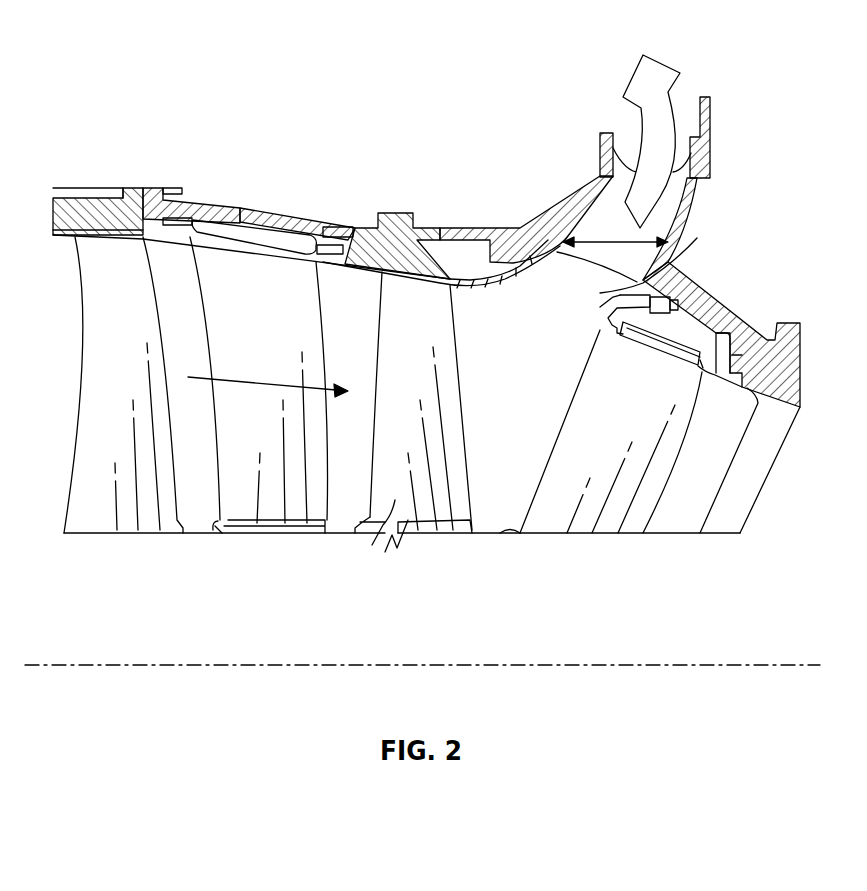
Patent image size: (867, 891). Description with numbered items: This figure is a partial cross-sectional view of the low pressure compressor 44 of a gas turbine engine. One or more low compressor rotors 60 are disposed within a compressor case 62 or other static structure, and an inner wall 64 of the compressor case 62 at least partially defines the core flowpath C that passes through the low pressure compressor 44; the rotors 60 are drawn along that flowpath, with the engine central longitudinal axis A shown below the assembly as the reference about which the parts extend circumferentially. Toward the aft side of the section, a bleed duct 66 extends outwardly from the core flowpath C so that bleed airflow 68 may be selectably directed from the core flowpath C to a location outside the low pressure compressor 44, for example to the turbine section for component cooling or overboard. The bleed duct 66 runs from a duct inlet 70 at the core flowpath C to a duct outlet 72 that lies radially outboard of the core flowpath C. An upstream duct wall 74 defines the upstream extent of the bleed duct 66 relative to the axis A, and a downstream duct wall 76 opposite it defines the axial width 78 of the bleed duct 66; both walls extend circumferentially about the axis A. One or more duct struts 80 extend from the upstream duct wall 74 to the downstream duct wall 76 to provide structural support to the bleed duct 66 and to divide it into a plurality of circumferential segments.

The low pressure compressor 44 is at (159, 66).
The low compressor rotor 60 is at (95, 507).
The compressor case 62 is at (380, 230).
The inner wall 64 is at (443, 270).
The bleed duct 66 is at (612, 190).
The bleed airflow 68 is at (642, 58).
The duct inlet 70 is at (683, 250).
The duct outlet 72 is at (603, 134).
The upstream duct wall 74 is at (580, 222).
The downstream duct wall 76 is at (702, 200).
The axial width 78 is at (567, 248).
The duct strut 80 is at (694, 176).
The engine central longitudinal axis A is at (82, 666).
The core flowpath C is at (248, 380).